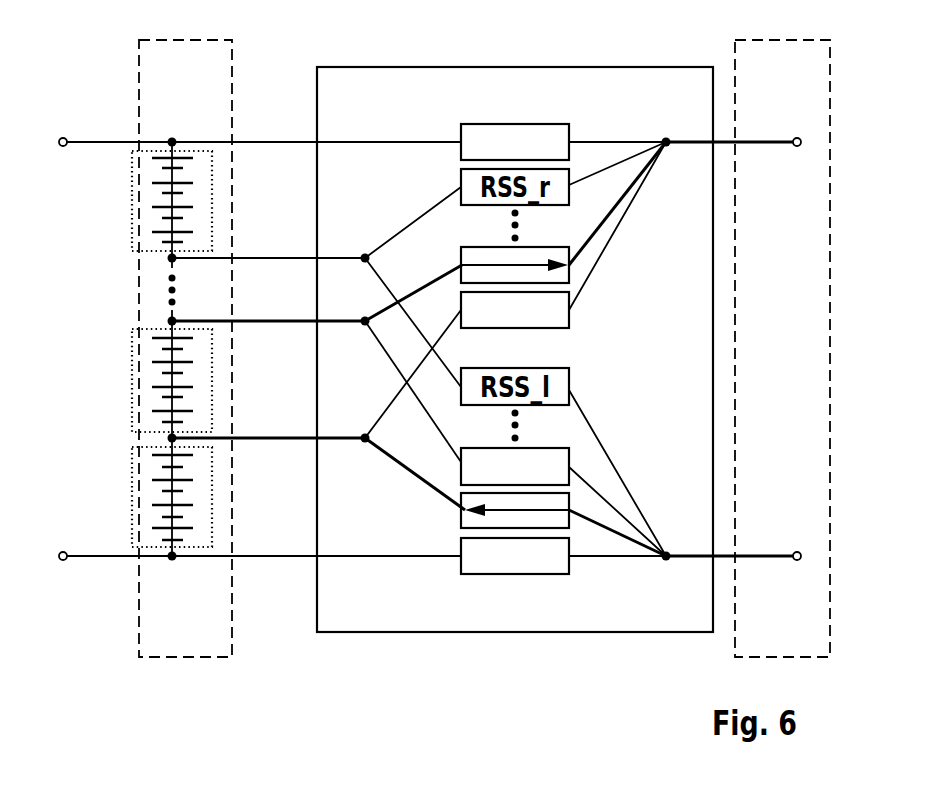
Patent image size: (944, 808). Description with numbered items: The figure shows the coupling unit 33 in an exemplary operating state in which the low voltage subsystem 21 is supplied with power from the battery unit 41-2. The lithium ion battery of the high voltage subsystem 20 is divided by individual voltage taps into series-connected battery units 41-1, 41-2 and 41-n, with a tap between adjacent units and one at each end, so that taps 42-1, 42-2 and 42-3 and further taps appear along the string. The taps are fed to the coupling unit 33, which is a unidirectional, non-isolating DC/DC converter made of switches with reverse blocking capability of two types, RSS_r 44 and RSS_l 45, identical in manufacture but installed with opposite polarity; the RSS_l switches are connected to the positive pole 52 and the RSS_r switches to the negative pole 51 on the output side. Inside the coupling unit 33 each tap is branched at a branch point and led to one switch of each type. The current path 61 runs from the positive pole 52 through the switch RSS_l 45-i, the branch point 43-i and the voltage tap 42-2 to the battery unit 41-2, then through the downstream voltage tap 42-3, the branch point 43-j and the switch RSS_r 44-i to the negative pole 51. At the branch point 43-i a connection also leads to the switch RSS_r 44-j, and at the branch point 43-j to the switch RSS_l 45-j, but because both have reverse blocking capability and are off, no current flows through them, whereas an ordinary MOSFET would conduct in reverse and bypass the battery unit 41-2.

The high voltage subsystem 20 is at (232, 385).
The low voltage subsystem 21 is at (735, 342).
The coupling unit 33 is at (593, 67).
The battery unit 41-n is at (132, 201).
The battery unit 41-2 is at (132, 382).
The battery unit 41-1 is at (132, 497).
The individual voltage tap 42-3 is at (172, 321).
The individual voltage tap 42-2 is at (172, 438).
The individual voltage tap 42-1 is at (172, 560).
The branch point 43-j is at (365, 326).
The branch point 43-i is at (365, 443).
The switch with reverse blocking capability RSS_r 44 is at (516, 124).
The switch with reverse blocking capability RSS_r 44-i is at (569, 277).
The switch with reverse blocking capability RSS_r 44-j is at (569, 320).
The switch with reverse blocking capability RSS_l 45 is at (514, 575).
The switch with reverse blocking capability RSS_l 45-i is at (461, 520).
The switch with reverse blocking capability RSS_l 45-j is at (569, 458).
The negative pole 51 is at (797, 137).
The positive pole 52 is at (797, 561).
The current path 61 is at (419, 474).